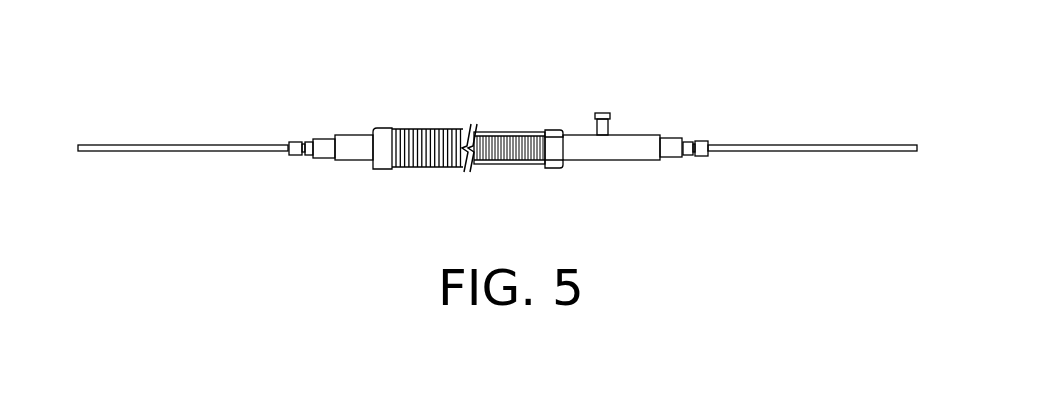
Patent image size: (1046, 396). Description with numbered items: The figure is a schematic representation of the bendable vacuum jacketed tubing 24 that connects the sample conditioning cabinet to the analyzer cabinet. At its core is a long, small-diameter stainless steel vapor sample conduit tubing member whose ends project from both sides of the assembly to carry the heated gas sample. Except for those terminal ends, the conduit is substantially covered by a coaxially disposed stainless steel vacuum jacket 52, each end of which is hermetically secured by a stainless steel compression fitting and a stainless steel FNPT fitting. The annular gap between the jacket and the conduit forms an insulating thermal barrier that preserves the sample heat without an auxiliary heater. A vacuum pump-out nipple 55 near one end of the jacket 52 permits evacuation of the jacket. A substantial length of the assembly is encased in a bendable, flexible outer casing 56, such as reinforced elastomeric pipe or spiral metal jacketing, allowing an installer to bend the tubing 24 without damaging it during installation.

The vacuum jacketed tubing 24 is at (492, 78).
The vacuum jacket 52 is at (625, 160).
The vacuum pump-out nipple 55 is at (597, 112).
The outer casing 56 is at (527, 170).